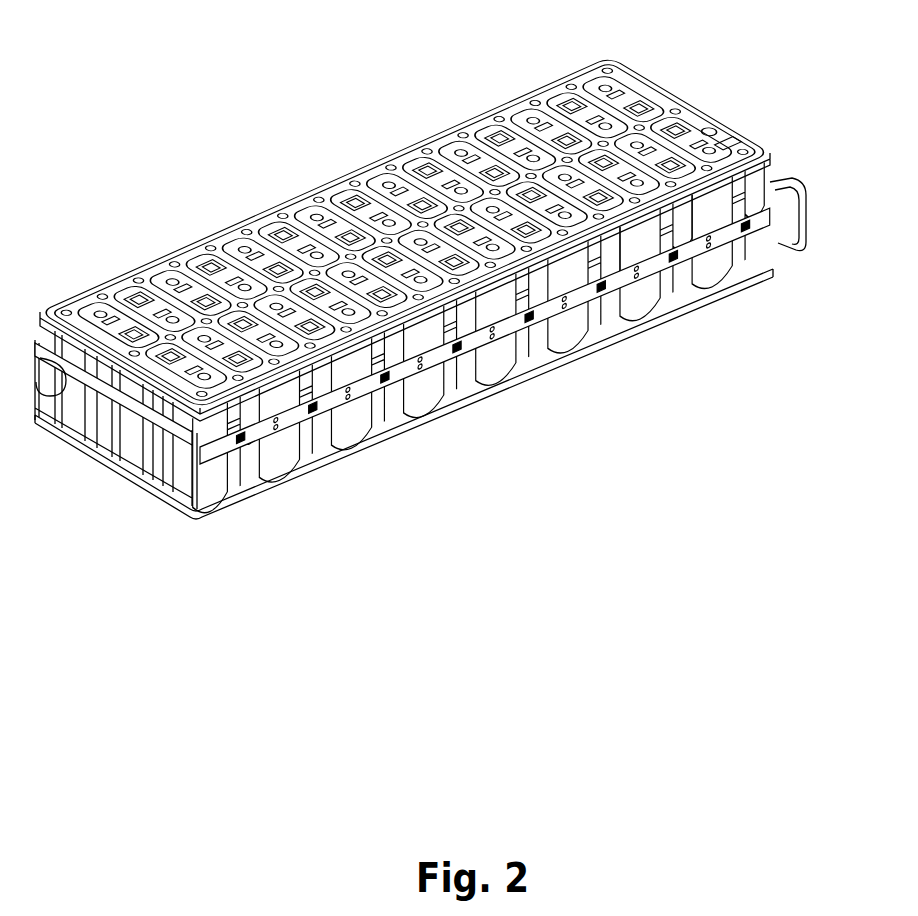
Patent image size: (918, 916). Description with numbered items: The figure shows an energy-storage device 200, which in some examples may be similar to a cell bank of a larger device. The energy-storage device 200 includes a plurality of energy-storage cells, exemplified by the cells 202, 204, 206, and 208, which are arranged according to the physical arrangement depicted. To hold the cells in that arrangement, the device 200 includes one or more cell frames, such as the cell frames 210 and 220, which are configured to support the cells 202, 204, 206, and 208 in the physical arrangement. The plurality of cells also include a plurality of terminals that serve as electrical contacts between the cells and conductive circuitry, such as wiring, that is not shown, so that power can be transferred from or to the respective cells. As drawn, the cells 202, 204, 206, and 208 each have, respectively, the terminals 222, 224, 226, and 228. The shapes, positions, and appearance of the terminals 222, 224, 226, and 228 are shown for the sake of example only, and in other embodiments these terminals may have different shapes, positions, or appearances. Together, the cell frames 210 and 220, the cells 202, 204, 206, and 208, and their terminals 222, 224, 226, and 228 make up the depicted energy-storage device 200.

The energy-storage device 200 is at (240, 173).
The energy-storage cell 202 is at (644, 293).
The energy-storage cell 204 is at (682, 279).
The energy-storage cell 206 is at (716, 267).
The energy-storage cell 208 is at (758, 257).
The cell frame 210 is at (328, 466).
The cell frame 220 is at (774, 152).
The terminal 222 is at (628, 192).
The terminal 224 is at (634, 156).
The terminal 226 is at (684, 150).
The terminal 228 is at (721, 136).